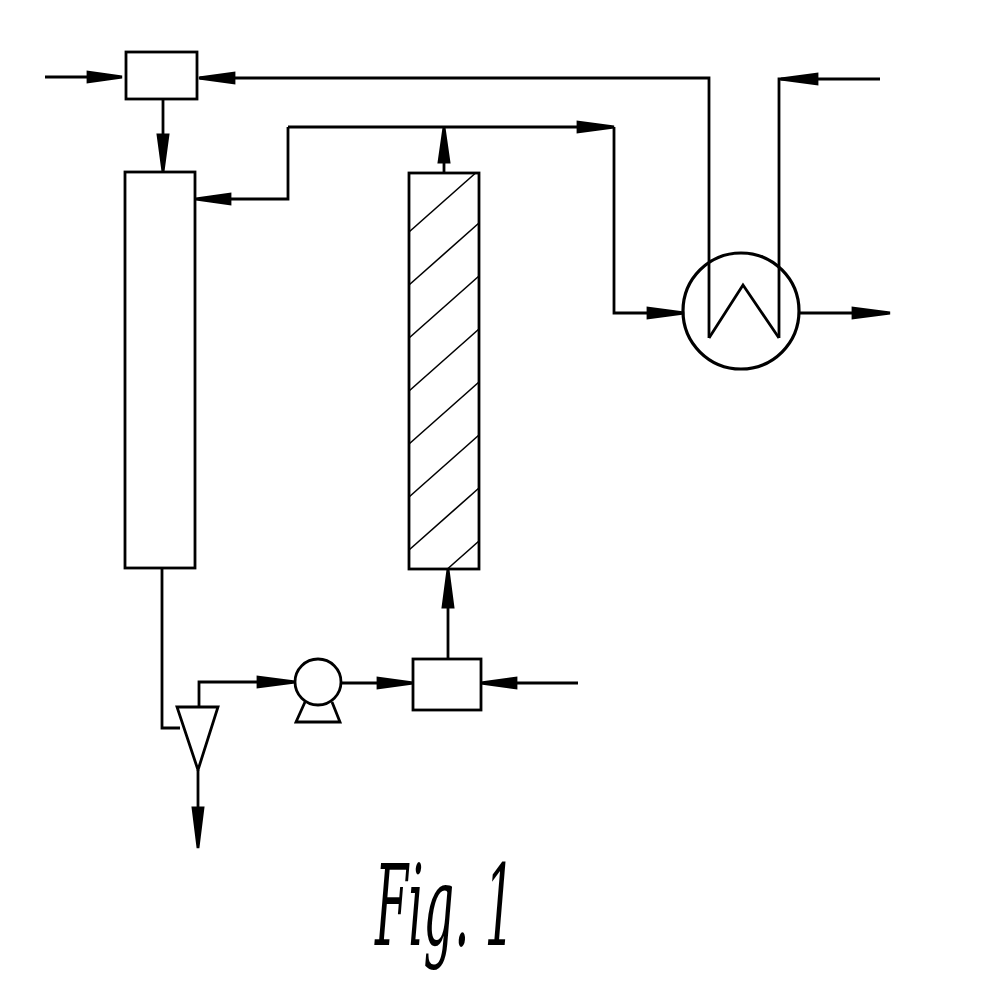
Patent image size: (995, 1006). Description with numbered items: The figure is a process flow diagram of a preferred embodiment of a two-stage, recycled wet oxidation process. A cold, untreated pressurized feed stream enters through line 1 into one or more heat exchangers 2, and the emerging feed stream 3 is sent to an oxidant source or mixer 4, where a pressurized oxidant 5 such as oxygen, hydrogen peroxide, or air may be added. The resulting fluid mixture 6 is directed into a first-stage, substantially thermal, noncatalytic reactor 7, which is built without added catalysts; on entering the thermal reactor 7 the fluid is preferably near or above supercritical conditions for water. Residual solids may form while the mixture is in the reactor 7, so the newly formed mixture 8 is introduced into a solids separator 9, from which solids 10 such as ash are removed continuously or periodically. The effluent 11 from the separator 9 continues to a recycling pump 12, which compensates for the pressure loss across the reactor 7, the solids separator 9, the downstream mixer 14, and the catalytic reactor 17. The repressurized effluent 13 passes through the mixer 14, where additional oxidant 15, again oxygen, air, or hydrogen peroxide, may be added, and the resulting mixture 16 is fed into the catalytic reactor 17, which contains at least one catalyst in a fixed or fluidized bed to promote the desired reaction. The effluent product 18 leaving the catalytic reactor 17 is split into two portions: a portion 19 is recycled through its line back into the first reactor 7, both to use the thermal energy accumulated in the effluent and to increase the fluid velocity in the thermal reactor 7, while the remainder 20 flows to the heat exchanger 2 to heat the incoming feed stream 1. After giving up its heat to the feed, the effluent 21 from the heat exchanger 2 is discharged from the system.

The line 1 is at (834, 78).
The heat exchanger 2 is at (743, 371).
The emerging feed stream 3 is at (663, 78).
The mixer 4 is at (152, 52).
The pressurized oxidant 5 is at (70, 77).
The fluid mixture 6 is at (160, 125).
The thermal reactor 7 is at (125, 370).
The mixture 8 is at (162, 620).
The solids separator 9 is at (185, 748).
The solids 10 is at (198, 800).
The effluent 11 is at (233, 680).
The recycling pump 12 is at (315, 722).
The repressurized effluent 13 is at (365, 680).
The mixer 14 is at (445, 710).
The additional oxidant 15 is at (548, 683).
The mixture 16 is at (448, 622).
The catalytic reactor 17 is at (479, 432).
The effluent product 18 is at (447, 153).
The recycled portion 19 is at (249, 200).
The remainder 20 is at (614, 250).
The effluent 21 is at (840, 313).